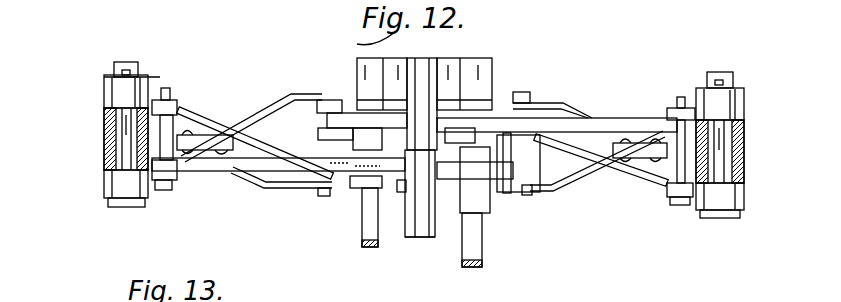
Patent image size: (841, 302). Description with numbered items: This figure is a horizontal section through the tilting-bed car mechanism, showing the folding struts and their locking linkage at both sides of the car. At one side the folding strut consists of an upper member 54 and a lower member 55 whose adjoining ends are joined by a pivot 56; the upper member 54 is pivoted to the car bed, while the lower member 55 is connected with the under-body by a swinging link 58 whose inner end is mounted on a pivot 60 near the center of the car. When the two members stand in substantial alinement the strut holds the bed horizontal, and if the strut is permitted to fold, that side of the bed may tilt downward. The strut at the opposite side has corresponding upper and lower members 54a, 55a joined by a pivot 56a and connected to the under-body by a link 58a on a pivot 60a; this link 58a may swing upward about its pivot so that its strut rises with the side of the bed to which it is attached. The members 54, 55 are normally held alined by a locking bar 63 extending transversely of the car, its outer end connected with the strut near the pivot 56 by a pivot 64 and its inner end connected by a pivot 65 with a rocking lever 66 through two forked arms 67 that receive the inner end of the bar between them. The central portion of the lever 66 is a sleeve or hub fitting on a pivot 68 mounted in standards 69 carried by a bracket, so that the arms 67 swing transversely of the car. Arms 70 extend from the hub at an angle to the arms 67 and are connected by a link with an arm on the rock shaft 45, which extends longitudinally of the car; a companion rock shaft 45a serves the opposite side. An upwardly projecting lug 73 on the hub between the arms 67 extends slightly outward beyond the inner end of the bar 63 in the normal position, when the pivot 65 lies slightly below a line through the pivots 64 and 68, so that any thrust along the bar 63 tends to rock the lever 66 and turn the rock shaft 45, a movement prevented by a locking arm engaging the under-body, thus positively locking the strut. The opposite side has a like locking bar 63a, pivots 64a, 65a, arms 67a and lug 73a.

In FIG. 12, the rock shaft 45 is at (483, 264).
In FIG. 12, the striker plate 45a is at (364, 248).
In FIG. 12, the upper member of folding strut 54 is at (104, 138).
In FIG. 12, the cylinder 54a is at (745, 144).
In FIG. 12, the lower member of folding strut 55 is at (104, 88).
In FIG. 12, the collar 55a is at (745, 91).
In FIG. 12, the pivot 56 is at (139, 63).
In FIG. 12, the cap 56a is at (734, 73).
In FIG. 12, the swinging link 58 is at (243, 157).
In FIG. 12, the swinging link 58a is at (578, 179).
In FIG. 12, the pivot 60 is at (325, 193).
In FIG. 12, the link bar 60a is at (528, 193).
In FIG. 12, the locking bar 63 is at (208, 172).
In FIG. 12, the bar 63a is at (628, 121).
In FIG. 12, the pivot 64 is at (170, 191).
In FIG. 12, the rod 64a is at (531, 94).
In FIG. 12, the pivot 65 is at (361, 195).
In FIG. 12, the block 65a is at (458, 100).
In FIG. 12, the rocking lever 66 is at (387, 79).
In FIG. 12, the arms 67 is at (359, 188).
In FIG. 12, the block 67a is at (494, 104).
In FIG. 12, the pivot 68 is at (416, 238).
In FIG. 12, the standards 69 is at (492, 60).
In FIG. 12, the arms 70 is at (372, 110).
In FIG. 12, the upwardly projecting lug 73 is at (403, 191).
In FIG. 12, the pin 73a is at (447, 112).
In FIG. 13, the pin 73a is at (100, 301).